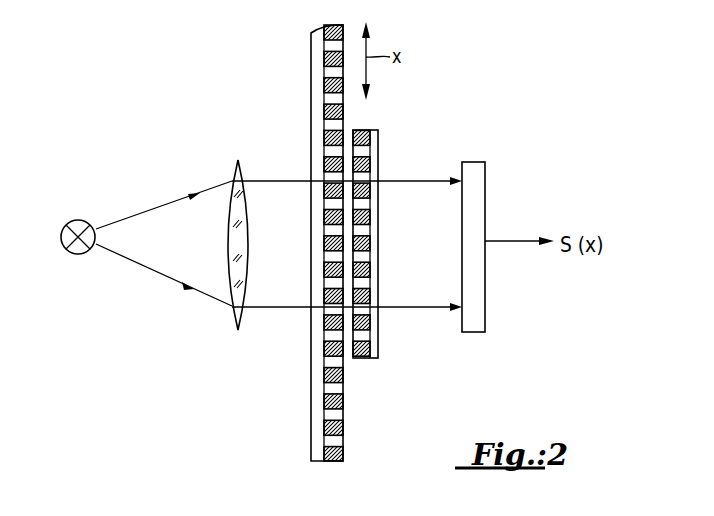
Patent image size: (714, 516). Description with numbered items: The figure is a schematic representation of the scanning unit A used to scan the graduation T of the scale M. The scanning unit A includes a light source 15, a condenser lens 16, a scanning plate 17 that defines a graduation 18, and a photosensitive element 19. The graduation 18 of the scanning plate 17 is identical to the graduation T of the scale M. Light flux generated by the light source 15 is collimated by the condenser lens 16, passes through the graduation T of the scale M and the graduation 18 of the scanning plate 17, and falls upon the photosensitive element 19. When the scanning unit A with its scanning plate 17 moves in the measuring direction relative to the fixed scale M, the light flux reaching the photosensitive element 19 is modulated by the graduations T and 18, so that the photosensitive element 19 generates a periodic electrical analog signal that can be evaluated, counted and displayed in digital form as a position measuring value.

The light source 15 is at (78, 254).
The condenser lens 16 is at (241, 294).
The scanning plate 17 is at (370, 345).
The graduation 18 is at (367, 177).
The photosensitive element 19 is at (475, 170).
The graduation T is at (343, 426).
The scale M is at (318, 410).
The scanning unit A is at (222, 158).